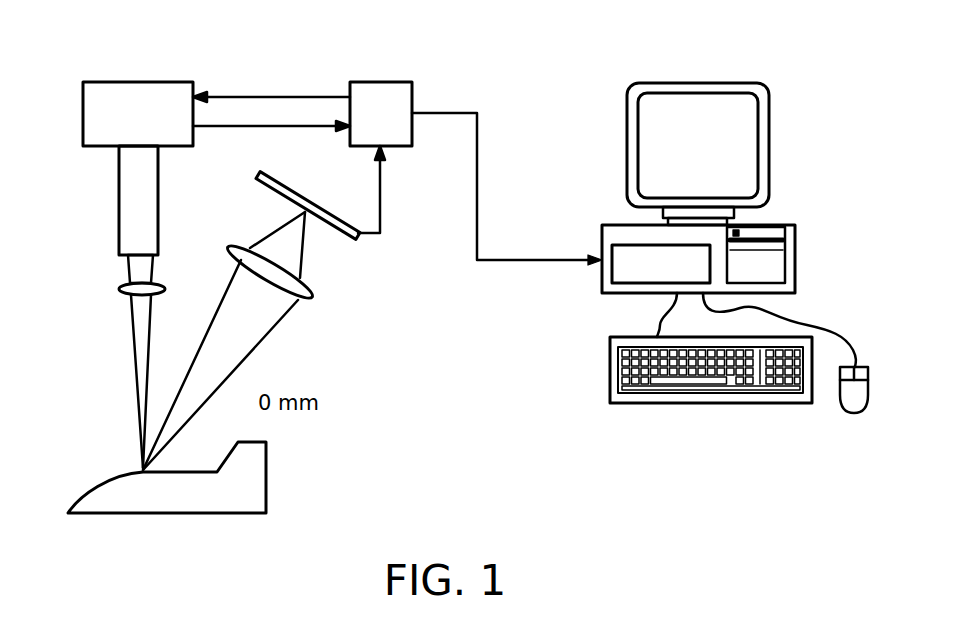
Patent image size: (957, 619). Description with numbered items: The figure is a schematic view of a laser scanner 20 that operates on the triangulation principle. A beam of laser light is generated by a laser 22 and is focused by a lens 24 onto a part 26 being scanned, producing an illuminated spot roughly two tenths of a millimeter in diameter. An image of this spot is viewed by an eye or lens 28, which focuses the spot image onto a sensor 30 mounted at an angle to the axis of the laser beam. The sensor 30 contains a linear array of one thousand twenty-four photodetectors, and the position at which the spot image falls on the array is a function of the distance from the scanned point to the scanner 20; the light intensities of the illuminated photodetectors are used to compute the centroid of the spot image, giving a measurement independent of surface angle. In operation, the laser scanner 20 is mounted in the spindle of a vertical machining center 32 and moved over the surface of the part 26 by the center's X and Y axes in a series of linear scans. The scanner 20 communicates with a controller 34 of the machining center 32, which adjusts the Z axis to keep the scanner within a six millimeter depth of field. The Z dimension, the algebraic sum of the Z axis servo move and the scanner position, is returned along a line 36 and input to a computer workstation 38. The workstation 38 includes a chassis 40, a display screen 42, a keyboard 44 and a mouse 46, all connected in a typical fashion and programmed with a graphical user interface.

The laser scanner 20 is at (358, 376).
The laser 22 is at (158, 200).
The lens 24 is at (119, 289).
The part 26 is at (266, 483).
The lens 28 is at (303, 297).
The sensor 30 is at (322, 210).
The vertical machining center 32 is at (135, 82).
The controller 34 is at (376, 82).
The line 36 is at (443, 113).
The computer workstation 38 is at (578, 140).
The chassis 40 is at (602, 240).
The display screen 42 is at (769, 121).
The keyboard 44 is at (700, 403).
The mouse 46 is at (852, 413).